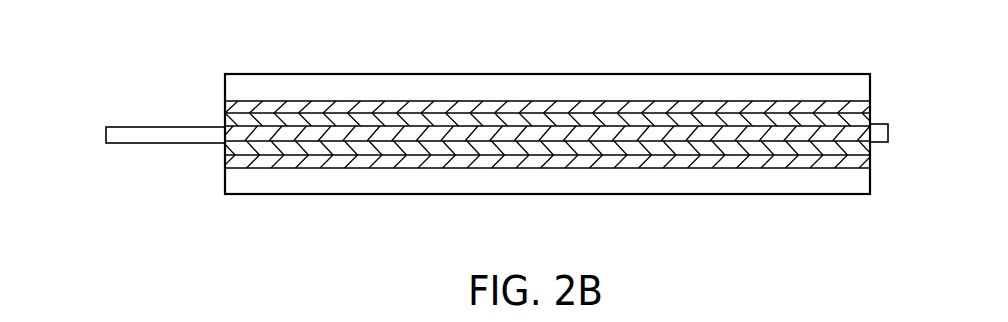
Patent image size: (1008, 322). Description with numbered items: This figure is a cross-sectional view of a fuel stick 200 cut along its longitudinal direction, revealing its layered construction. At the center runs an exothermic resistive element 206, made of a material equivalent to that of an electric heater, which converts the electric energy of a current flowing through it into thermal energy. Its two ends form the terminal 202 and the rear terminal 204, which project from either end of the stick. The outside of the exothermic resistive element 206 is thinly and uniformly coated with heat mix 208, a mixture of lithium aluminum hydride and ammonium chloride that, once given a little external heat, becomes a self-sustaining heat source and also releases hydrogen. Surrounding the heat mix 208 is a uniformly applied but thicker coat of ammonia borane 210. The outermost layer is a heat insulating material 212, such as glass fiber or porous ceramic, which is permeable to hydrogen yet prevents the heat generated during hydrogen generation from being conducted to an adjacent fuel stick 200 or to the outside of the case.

The fuel stick 200 is at (667, 73).
The terminal 202 is at (173, 127).
The rear terminal 204 is at (877, 147).
The exothermic resistive element 206 is at (283, 134).
The heat mix 208 is at (368, 148).
The ammonia borane 210 is at (468, 162).
The heat insulating material 212 is at (567, 182).